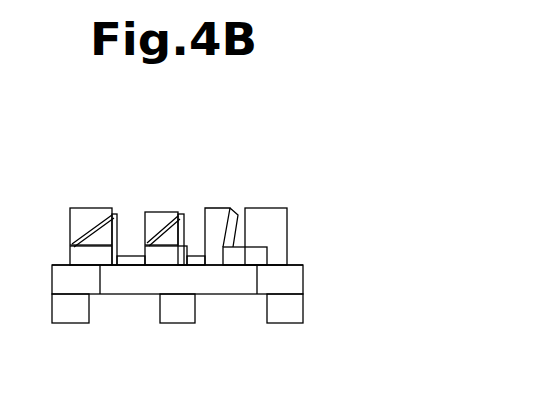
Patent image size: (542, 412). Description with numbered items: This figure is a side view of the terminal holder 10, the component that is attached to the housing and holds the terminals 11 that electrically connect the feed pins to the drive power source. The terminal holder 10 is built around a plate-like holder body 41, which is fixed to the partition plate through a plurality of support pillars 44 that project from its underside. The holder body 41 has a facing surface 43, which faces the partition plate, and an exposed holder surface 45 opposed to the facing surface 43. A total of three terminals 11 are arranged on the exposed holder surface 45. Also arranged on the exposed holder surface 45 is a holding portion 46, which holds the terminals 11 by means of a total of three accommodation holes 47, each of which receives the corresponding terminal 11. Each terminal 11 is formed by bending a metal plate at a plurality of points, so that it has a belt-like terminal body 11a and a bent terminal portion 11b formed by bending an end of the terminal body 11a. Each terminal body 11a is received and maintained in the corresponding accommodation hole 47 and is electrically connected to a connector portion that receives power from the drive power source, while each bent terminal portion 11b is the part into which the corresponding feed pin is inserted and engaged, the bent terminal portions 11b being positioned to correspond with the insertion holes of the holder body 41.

The terminal holder 10 is at (329, 171).
The terminal 11 is at (60, 210).
The terminal body 11a is at (83, 225).
The bent terminal portion 11b is at (80, 256).
The holder body 41 is at (300, 278).
The facing surface 43 is at (220, 297).
The support pillar 44 is at (285, 313).
The exposed holder surface 45 is at (292, 263).
The holding portion 46 is at (268, 222).
The accommodation hole 47 is at (144, 216).